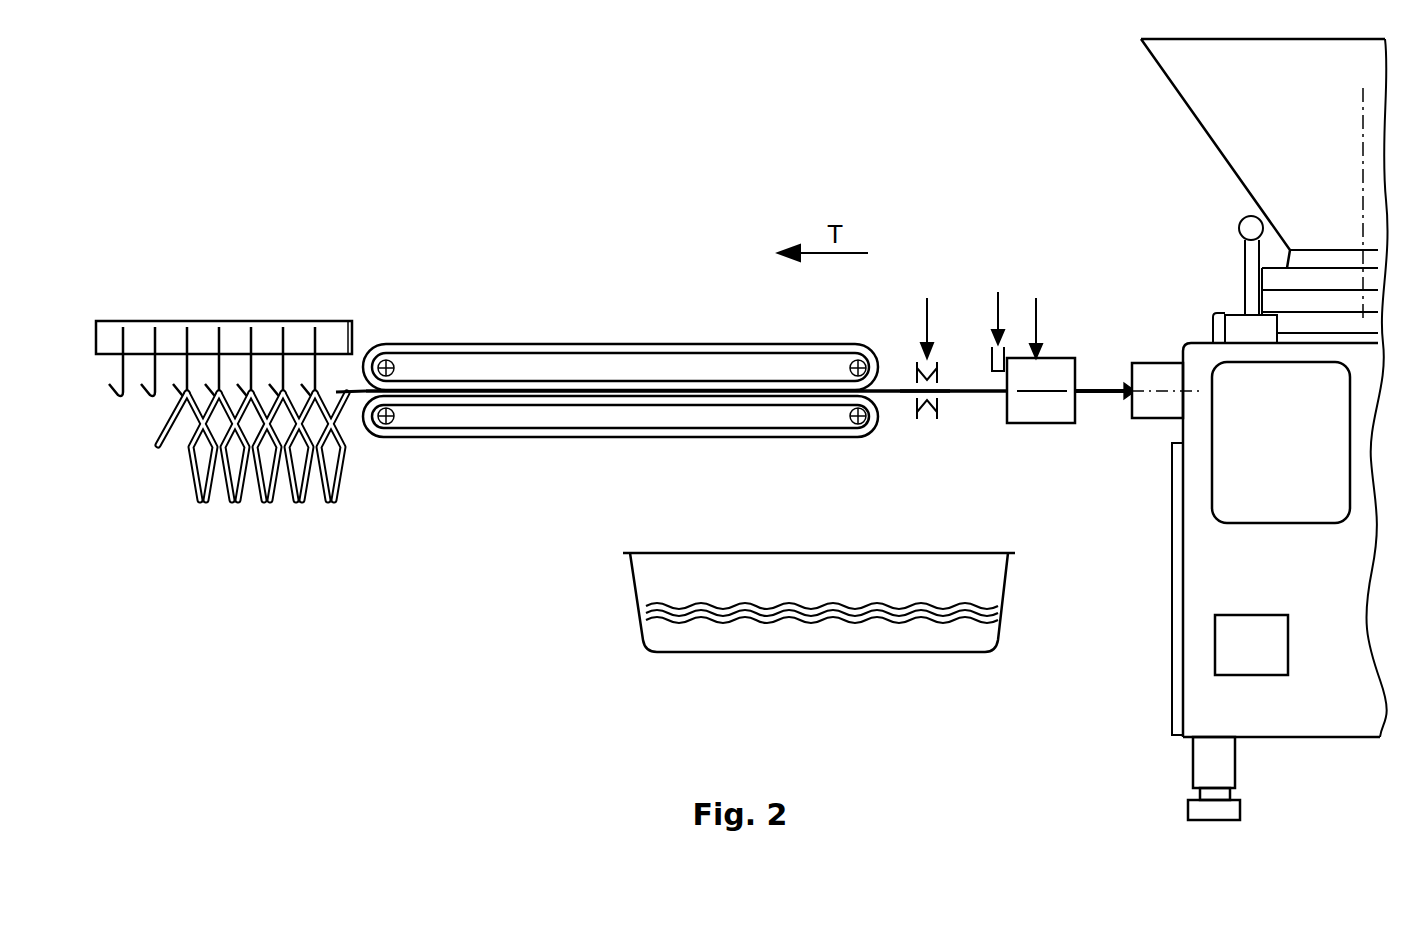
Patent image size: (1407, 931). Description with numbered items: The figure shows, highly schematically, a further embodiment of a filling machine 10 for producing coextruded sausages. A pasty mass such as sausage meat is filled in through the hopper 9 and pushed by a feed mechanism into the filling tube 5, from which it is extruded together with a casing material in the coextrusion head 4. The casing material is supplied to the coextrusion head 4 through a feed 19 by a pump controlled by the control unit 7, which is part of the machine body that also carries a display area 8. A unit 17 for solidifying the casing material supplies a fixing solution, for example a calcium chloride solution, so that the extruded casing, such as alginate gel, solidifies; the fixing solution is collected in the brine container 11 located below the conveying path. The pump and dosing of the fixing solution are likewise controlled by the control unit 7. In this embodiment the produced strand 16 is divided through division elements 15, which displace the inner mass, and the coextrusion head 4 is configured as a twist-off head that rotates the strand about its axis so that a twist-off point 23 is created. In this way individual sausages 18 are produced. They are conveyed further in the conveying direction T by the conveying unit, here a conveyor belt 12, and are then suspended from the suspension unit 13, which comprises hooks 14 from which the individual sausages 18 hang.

The coextrusion head 4 is at (1058, 424).
The filling tube 5 is at (1101, 386).
The control unit 7 is at (1260, 660).
The display / window of filling machine 8 is at (1238, 518).
The hopper 9 is at (1197, 122).
The filling machine 10 is at (1120, 90).
The brine container 11 is at (963, 650).
The conveyor belt 12 is at (789, 344).
The suspension unit 13 is at (224, 355).
The hooks 14 is at (108, 400).
The division elements 15 is at (926, 319).
The sausage strand 16 is at (963, 397).
The unit for solidifying the casing material 17 is at (996, 309).
The individual sausages 18 is at (338, 481).
The feed for the casing material 19 is at (1037, 320).
The twist-off point 23 is at (918, 397).